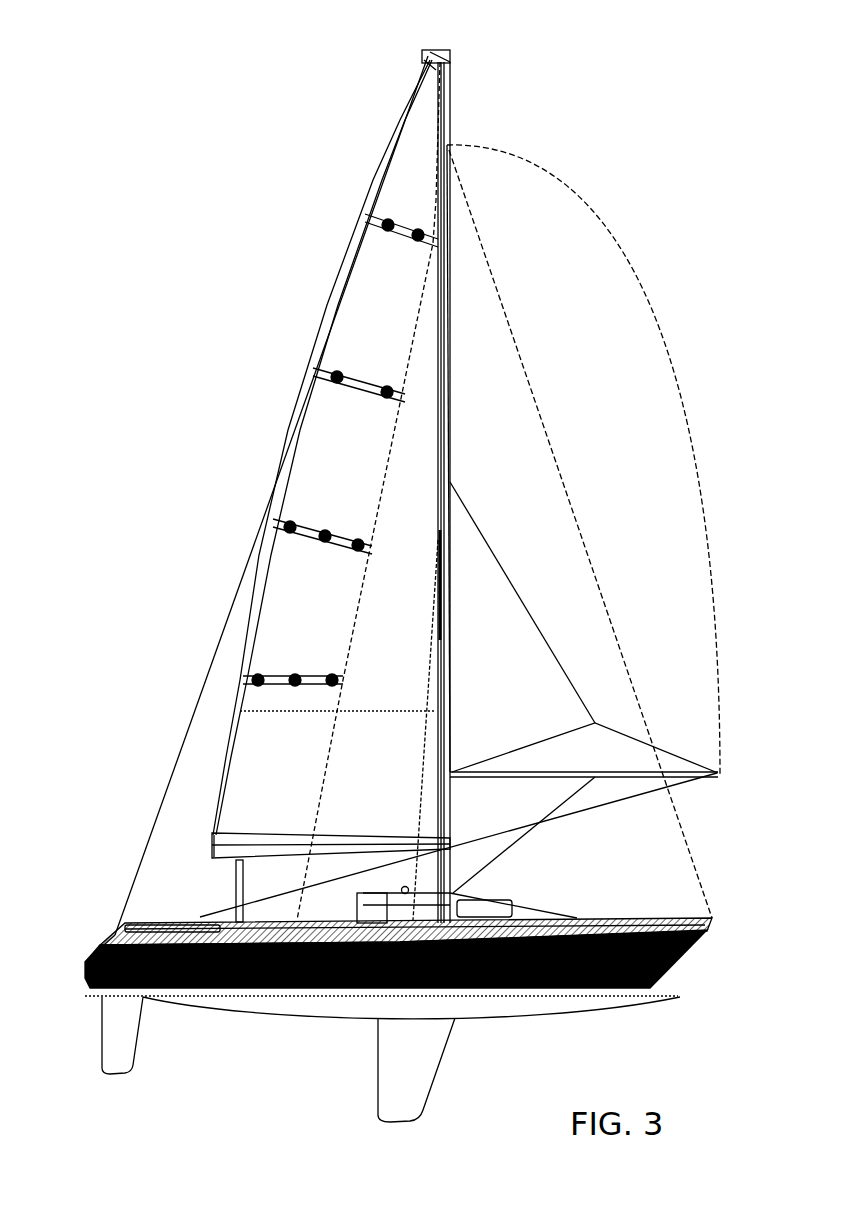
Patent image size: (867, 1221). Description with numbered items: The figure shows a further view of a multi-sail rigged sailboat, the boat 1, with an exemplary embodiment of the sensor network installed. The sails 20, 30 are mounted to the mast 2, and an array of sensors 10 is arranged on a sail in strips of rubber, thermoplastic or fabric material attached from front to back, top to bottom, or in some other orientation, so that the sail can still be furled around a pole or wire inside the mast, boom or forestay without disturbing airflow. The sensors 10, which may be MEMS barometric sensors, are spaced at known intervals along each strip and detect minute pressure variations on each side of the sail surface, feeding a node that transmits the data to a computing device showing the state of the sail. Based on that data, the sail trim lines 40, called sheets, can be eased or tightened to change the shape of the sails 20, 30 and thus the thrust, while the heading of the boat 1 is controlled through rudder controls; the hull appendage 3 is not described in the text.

The boat 1 is at (688, 955).
The mast 2 is at (452, 45).
The rudder 3 is at (98, 1031).
The sensors 10 is at (318, 375).
The sail 20 is at (332, 452).
The sail 30 is at (626, 425).
The sail trim lines 40 is at (152, 800).